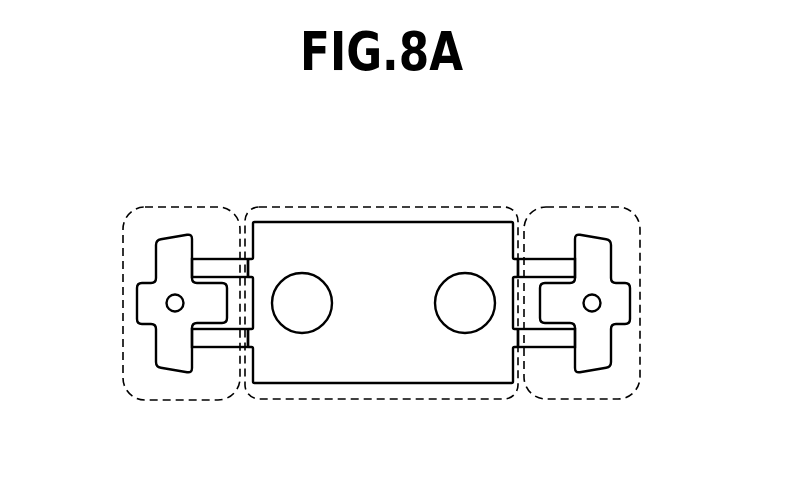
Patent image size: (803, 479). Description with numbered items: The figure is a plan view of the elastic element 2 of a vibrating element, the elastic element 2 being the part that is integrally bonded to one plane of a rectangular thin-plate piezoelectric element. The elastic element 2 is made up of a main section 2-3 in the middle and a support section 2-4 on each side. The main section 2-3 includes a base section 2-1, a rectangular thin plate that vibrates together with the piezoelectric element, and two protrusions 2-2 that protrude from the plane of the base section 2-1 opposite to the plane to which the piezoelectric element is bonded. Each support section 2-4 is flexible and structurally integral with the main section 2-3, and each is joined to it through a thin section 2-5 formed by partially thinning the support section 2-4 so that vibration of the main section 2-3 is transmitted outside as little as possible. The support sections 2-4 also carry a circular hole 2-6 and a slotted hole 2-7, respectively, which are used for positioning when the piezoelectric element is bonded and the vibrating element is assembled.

The elastic element 2 is at (632, 116).
The base section 2-1 is at (387, 360).
The protrusion 2-2 is at (302, 318).
The main section 2-3 is at (404, 207).
The support section 2-4 is at (131, 241).
The thin section 2-5 is at (222, 258).
The circular hole 2-6 is at (167, 304).
The slotted hole 2-7 is at (600, 303).